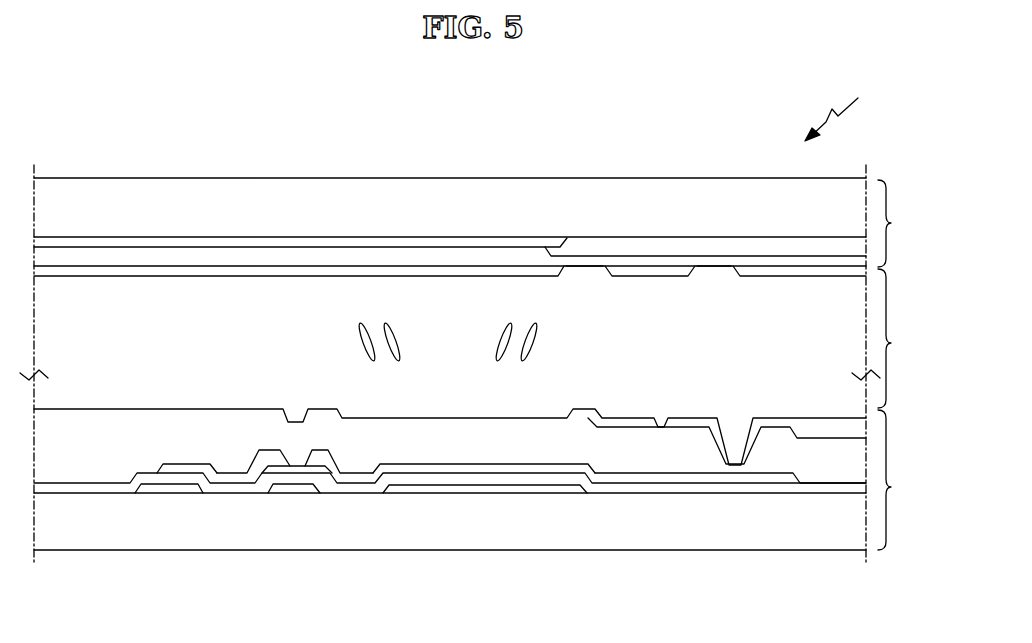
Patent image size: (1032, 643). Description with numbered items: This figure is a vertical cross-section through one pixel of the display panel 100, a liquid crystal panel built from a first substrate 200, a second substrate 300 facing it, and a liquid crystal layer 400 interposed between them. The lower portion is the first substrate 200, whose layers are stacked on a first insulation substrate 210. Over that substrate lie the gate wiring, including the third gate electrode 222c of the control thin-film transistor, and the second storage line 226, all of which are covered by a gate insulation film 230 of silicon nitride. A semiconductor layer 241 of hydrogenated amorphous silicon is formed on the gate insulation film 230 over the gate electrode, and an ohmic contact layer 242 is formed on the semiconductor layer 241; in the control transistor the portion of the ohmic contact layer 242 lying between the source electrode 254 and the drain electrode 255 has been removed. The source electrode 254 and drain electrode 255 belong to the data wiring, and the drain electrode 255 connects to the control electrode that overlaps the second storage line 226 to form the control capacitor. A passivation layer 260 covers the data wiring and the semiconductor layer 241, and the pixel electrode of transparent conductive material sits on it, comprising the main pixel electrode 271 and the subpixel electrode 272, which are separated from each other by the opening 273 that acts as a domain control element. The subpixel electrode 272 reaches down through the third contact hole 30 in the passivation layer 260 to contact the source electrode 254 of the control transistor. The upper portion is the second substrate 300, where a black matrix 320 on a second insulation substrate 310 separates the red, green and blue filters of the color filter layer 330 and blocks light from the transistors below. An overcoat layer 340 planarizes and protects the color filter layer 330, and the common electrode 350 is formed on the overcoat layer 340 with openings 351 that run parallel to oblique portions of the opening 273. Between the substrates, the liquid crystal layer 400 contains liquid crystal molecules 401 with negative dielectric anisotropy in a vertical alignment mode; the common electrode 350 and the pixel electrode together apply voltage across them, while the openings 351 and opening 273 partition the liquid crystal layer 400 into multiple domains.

The display panel 100 is at (841, 109).
The second substrate 300 is at (902, 223).
The liquid crystal layer 400 is at (902, 338).
The first substrate 200 is at (902, 480).
The second insulation substrate 310 is at (435, 190).
The black matrix 320 is at (297, 241).
The overcoat layer 340 is at (500, 256).
The color filter layer 330 is at (645, 247).
The common electrode 350 is at (362, 270).
The openings 351 is at (581, 275).
The liquid crystal molecules 401 is at (538, 338).
The first insulation substrate 210 is at (478, 548).
The second storage line 226 is at (155, 488).
The gate insulation film 230 is at (600, 488).
The drain electrode 255 is at (185, 470).
The third gate electrode 222c is at (298, 486).
The semiconductor layer 241 is at (265, 465).
The ohmic contact layer 242 is at (318, 480).
The source electrode 254 is at (530, 470).
The passivation layer 260 is at (768, 462).
The main pixel electrode 271 is at (636, 424).
The subpixel electrode 272 is at (828, 428).
The opening 273 is at (661, 412).
The third contact hole 30 is at (735, 412).